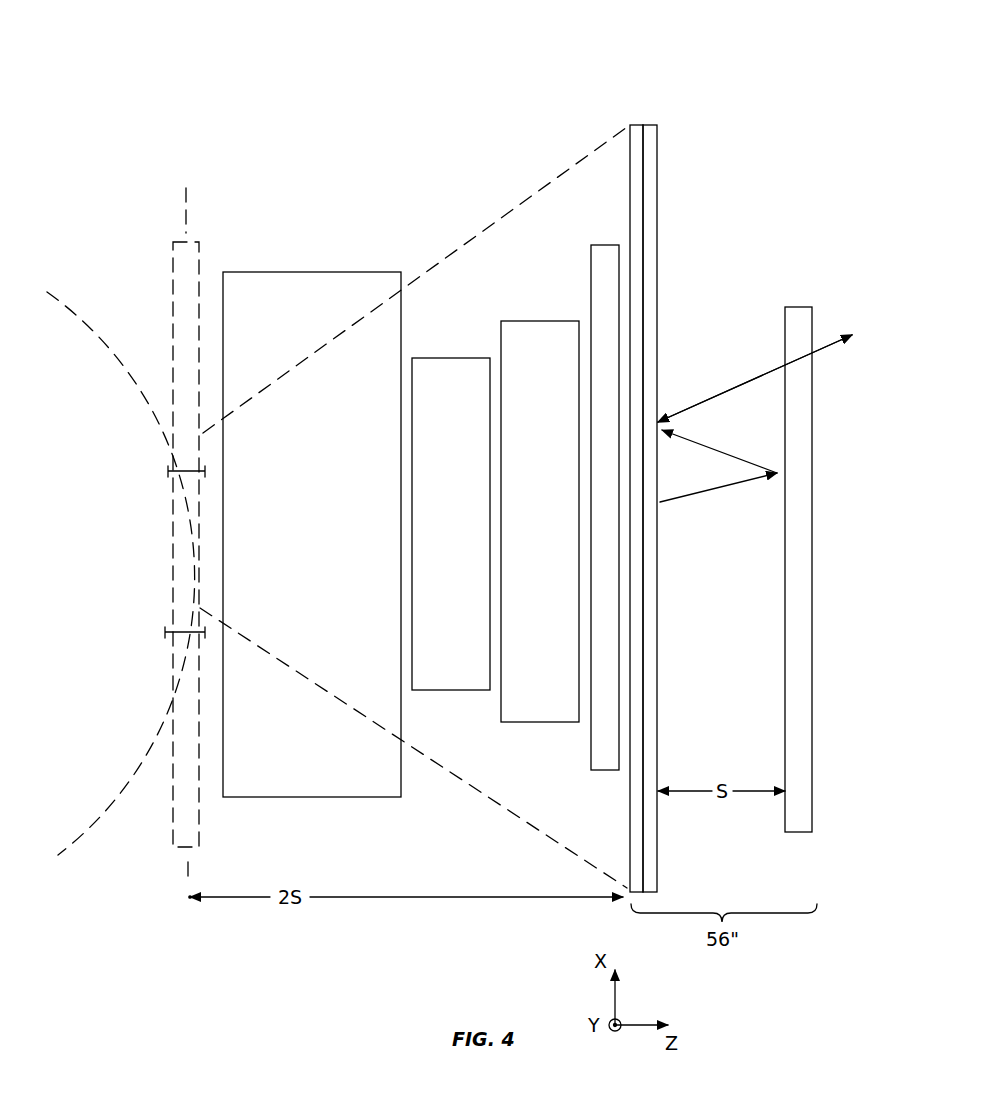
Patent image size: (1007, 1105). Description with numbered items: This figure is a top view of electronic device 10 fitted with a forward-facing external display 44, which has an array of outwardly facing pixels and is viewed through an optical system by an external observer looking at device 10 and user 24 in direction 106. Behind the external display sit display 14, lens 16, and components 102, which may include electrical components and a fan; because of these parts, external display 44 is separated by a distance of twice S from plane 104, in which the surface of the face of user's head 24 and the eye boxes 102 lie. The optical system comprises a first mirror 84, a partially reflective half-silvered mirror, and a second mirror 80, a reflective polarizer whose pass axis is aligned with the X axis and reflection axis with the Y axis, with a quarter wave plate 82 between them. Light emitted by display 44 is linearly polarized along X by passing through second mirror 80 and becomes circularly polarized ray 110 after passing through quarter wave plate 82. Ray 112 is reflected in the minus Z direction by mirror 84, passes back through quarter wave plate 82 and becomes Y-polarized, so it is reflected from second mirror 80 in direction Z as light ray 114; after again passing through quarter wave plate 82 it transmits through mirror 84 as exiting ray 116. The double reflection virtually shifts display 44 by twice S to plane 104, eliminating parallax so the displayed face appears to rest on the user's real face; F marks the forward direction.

The electronic device 10 is at (351, 76).
The display 14 is at (450, 690).
The lens 16 is at (303, 797).
The user's head 24 is at (78, 322).
The forward-facing external display 44 is at (602, 770).
The second mirror 80 is at (630, 125).
The quarter wave plate 82 is at (657, 125).
The first mirror 84 is at (797, 307).
The components / eye boxes 102 is at (168, 468).
The plane 104 is at (189, 204).
The direction 106 is at (915, 540).
The ray 110 is at (722, 488).
The ray 112 is at (736, 454).
The light ray 114 is at (750, 380).
The light / ray 116 is at (828, 345).
The front direction F is at (868, 273).